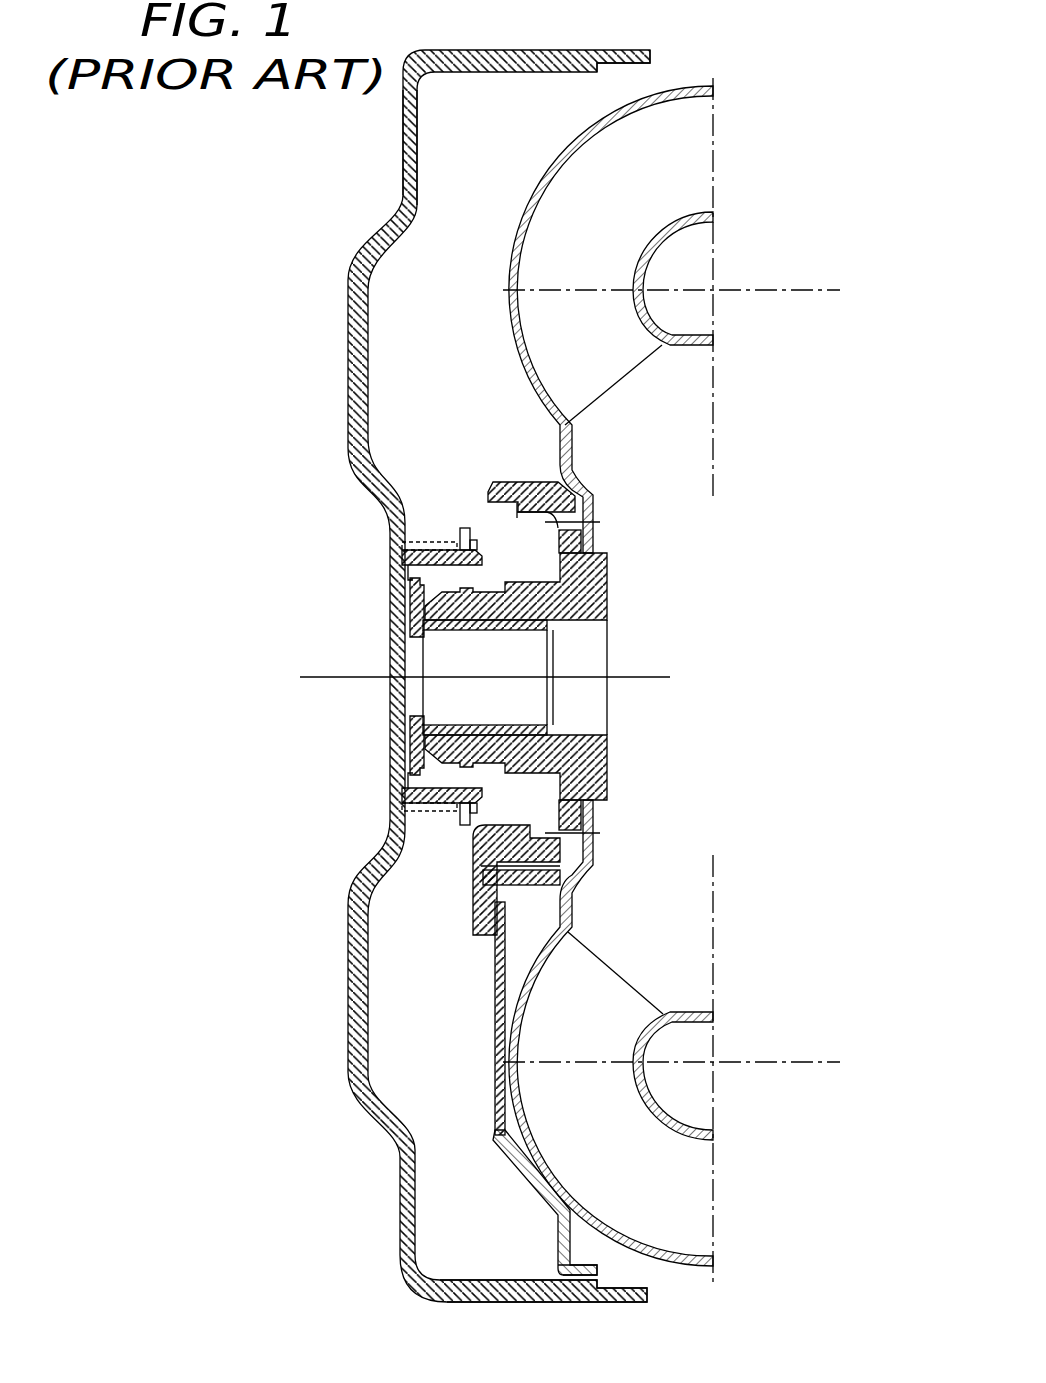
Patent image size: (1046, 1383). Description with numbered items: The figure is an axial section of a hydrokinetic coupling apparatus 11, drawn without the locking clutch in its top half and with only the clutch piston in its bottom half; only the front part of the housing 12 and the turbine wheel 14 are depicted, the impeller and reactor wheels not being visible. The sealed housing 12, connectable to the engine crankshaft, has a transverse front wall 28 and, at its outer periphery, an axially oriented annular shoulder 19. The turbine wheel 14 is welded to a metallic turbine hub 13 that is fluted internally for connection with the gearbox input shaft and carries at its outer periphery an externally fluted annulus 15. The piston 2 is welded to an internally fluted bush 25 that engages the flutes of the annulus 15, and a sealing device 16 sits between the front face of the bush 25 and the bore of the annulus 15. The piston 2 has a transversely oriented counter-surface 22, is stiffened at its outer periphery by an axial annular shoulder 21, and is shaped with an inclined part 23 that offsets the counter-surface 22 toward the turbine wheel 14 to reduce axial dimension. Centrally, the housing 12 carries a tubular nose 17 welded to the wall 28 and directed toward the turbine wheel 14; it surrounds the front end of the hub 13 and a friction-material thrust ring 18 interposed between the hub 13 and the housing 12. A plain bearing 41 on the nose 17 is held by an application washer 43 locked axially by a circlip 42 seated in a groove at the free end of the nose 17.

The piston 2 is at (487, 1005).
The hydrokinetic coupling apparatus 11 is at (735, 144).
The housing 12 is at (345, 341).
The turbine hub 13 is at (607, 773).
The turbine wheel 14 is at (697, 85).
The externally fluted annulus 15 is at (592, 497).
The sealing device 16 is at (464, 880).
The nose 17 is at (402, 552).
The thrust ring 18 is at (402, 656).
The annular shoulder 19 is at (632, 52).
The annular shoulder 21 is at (581, 1275).
The counter-surface 22 is at (558, 1245).
The inclined part 23 is at (532, 1176).
The bush 25 is at (543, 884).
The wall 28 is at (404, 182).
The plain bearing 41 is at (402, 820).
The circlip 42 is at (592, 547).
The application washer 43 is at (402, 534).